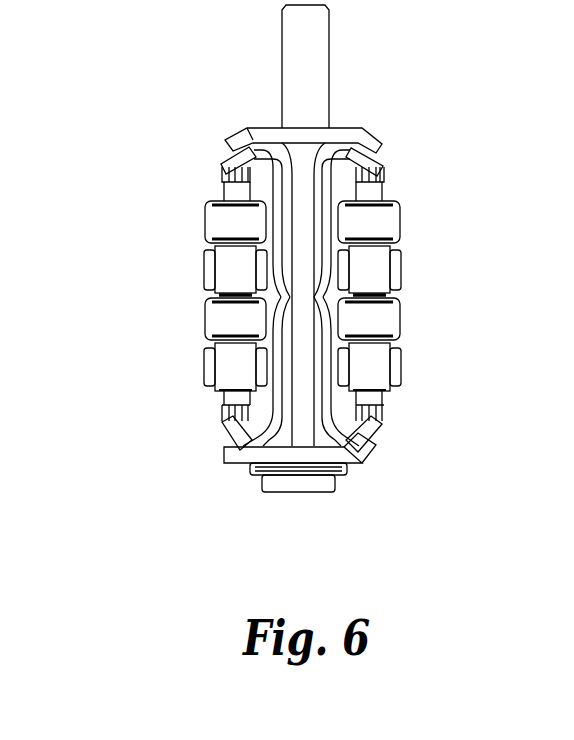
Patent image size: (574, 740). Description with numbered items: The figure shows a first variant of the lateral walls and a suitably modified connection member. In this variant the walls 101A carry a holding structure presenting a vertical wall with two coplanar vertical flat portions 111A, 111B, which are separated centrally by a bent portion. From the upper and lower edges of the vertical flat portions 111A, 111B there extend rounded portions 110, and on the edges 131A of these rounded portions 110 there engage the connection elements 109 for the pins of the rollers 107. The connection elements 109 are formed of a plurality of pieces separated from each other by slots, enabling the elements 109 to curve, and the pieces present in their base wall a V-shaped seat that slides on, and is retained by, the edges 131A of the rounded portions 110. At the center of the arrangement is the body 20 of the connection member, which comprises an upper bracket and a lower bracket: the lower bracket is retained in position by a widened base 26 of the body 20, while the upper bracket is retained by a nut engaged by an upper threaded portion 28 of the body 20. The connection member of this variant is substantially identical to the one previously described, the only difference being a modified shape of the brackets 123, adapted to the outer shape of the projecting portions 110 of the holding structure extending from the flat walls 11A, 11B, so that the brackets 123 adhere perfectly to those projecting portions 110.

The upper threaded portion 28 is at (320, 50).
The walls 101A is at (253, 153).
The connection elements 109 is at (222, 173).
The flat wall 11A is at (318, 193).
The flat wall 11B is at (320, 372).
The vertical flat portion 111A is at (290, 222).
The vertical flat portion 111B is at (284, 369).
The rollers 107 is at (385, 230).
The body 20 is at (302, 318).
The edges 131A is at (222, 423).
The brackets 123 is at (247, 457).
The rounded portions 110 is at (348, 440).
The widened base 26 is at (292, 483).